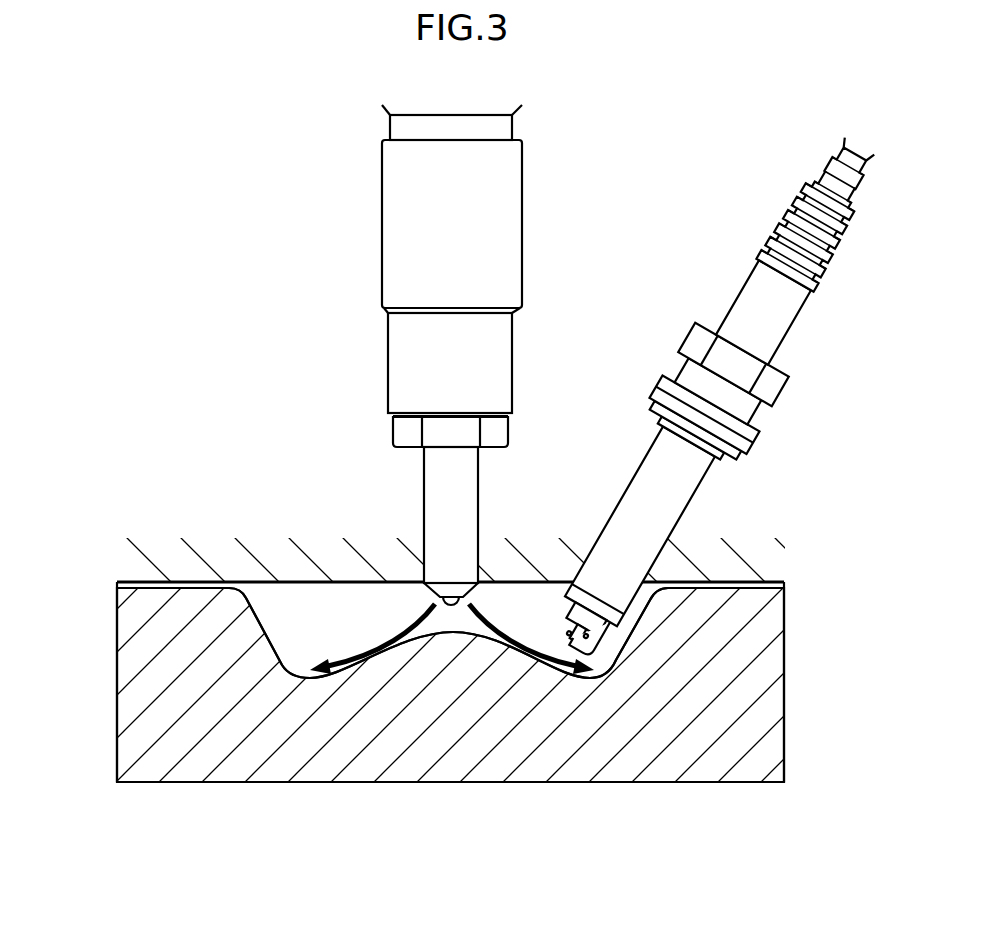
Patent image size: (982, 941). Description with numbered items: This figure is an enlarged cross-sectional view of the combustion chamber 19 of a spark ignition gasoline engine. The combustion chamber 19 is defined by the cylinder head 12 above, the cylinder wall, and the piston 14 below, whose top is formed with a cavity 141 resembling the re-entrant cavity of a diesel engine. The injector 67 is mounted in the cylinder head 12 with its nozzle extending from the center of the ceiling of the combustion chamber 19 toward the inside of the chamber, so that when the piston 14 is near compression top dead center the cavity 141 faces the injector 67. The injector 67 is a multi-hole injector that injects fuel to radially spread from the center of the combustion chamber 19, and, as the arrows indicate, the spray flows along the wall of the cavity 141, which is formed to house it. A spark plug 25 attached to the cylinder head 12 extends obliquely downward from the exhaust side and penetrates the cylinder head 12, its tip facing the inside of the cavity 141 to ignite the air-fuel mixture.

The cylinder head 12 is at (162, 587).
The piston 14 is at (760, 707).
The cavity 141 is at (262, 617).
The combustion chamber 19 is at (367, 606).
The spark plug 25 is at (688, 487).
The injector 67 is at (382, 232).